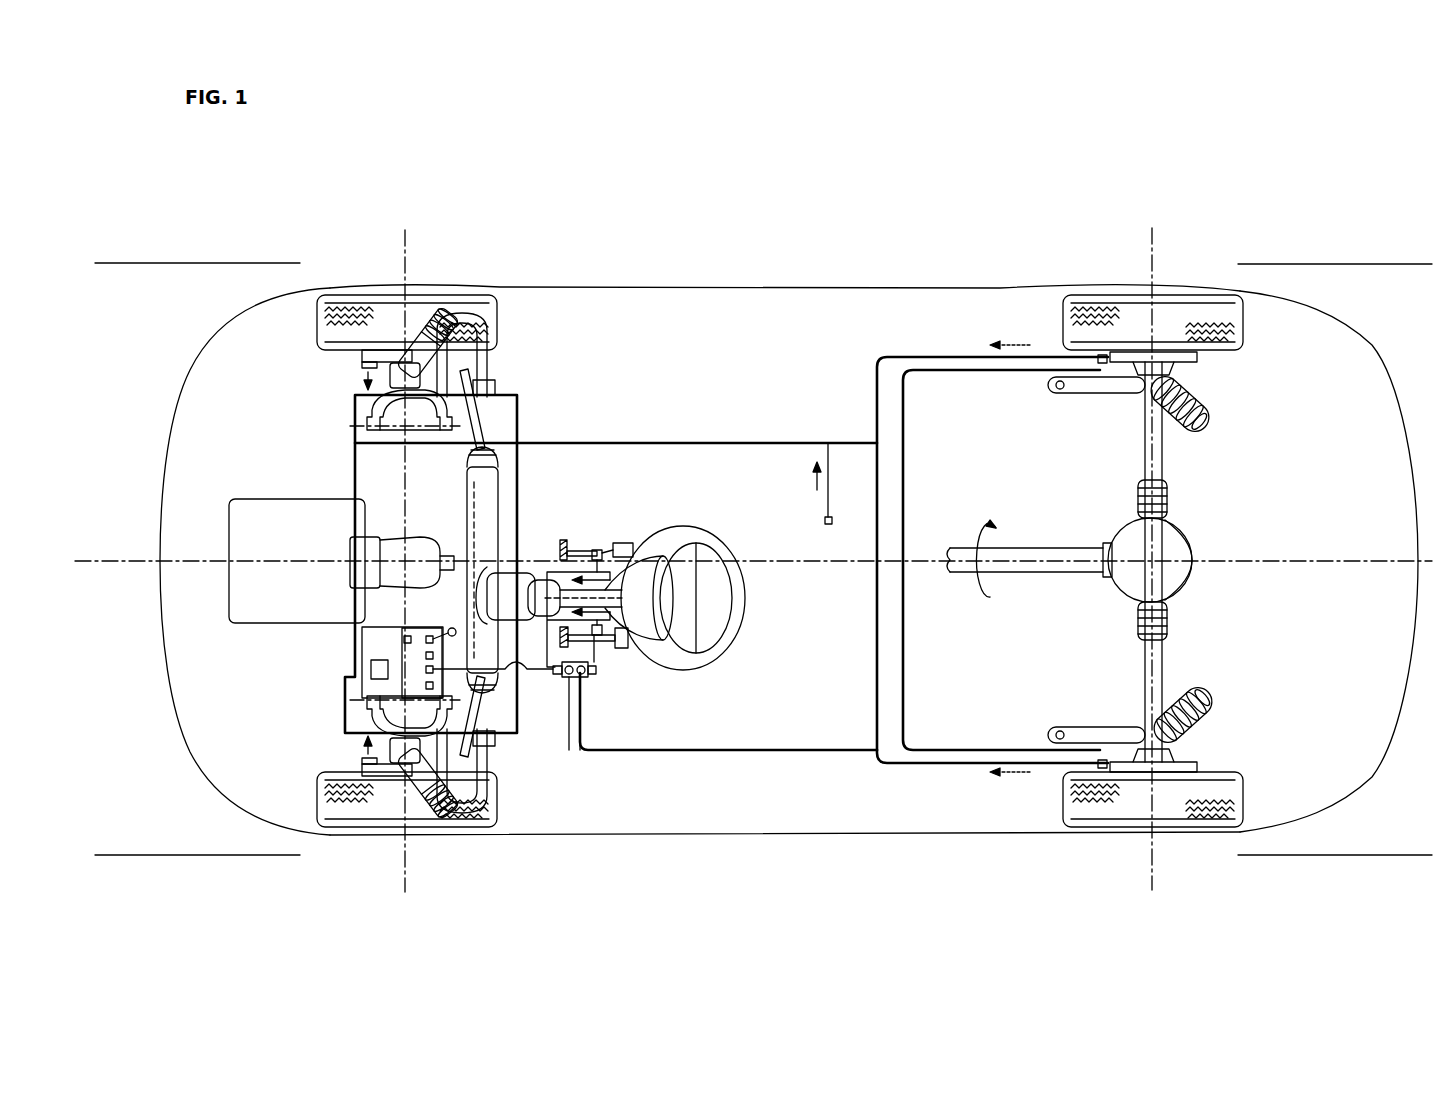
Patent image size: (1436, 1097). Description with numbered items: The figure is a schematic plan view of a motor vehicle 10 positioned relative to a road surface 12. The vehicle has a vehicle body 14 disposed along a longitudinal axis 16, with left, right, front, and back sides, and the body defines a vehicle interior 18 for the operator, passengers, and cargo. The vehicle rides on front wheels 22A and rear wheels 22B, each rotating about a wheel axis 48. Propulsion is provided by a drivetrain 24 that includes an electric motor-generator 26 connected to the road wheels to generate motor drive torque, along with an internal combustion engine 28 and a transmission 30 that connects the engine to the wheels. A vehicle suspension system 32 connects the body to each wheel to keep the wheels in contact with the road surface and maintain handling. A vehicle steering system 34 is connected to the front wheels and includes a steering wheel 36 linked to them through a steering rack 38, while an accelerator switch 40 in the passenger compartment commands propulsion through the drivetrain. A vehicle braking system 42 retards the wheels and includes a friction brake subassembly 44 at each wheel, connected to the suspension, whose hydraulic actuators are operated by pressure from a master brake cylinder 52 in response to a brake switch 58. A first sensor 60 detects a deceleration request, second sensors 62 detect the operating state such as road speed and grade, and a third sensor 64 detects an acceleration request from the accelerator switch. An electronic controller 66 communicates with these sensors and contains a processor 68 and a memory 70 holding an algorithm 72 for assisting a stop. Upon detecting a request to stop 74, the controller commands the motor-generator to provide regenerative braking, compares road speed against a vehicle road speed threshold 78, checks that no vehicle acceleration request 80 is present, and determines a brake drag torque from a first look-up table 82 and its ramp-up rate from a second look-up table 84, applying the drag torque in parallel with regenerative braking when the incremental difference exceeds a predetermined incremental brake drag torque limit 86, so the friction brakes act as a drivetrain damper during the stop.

The motor vehicle 10 is at (1137, 152).
The road surface 12 is at (1428, 319).
The vehicle body 14 is at (787, 277).
The longitudinal axis 16 is at (1280, 565).
The vehicle interior 18 is at (807, 808).
The front wheels 22A is at (470, 300).
The rear wheels 22B is at (1182, 300).
The drivetrain 24 is at (341, 581).
The electric motor-generator 26 is at (363, 535).
The internal combustion engine 28 is at (284, 536).
The transmission 30 is at (429, 571).
The vehicle suspension system 32 is at (505, 367).
The vehicle steering system 34 is at (602, 598).
The steering wheel 36 is at (722, 555).
The steering rack 38 is at (493, 518).
The accelerator switch 40 is at (632, 548).
The vehicle braking system 42 is at (341, 392).
The friction brake subassembly 44 is at (1200, 357).
The wheel axis 48 is at (403, 265).
The master brake cylinder 52 is at (592, 680).
The brake switch 58 is at (625, 648).
The first sensor 60 is at (601, 637).
The second sensor 62 is at (348, 377).
The third sensor 64 is at (600, 550).
The electronic controller 66 is at (432, 661).
The processor 68 is at (369, 665).
The memory 70 is at (445, 669).
The algorithm 72 is at (408, 634).
The request to stop the vehicle 74 is at (630, 642).
The vehicle road speed threshold 78 is at (429, 634).
The vehicle acceleration request 80 is at (600, 555).
The first look-up table 82 is at (434, 656).
The second look-up table 84 is at (434, 670).
The predetermined incremental brake drag torque limit 86 is at (434, 686).